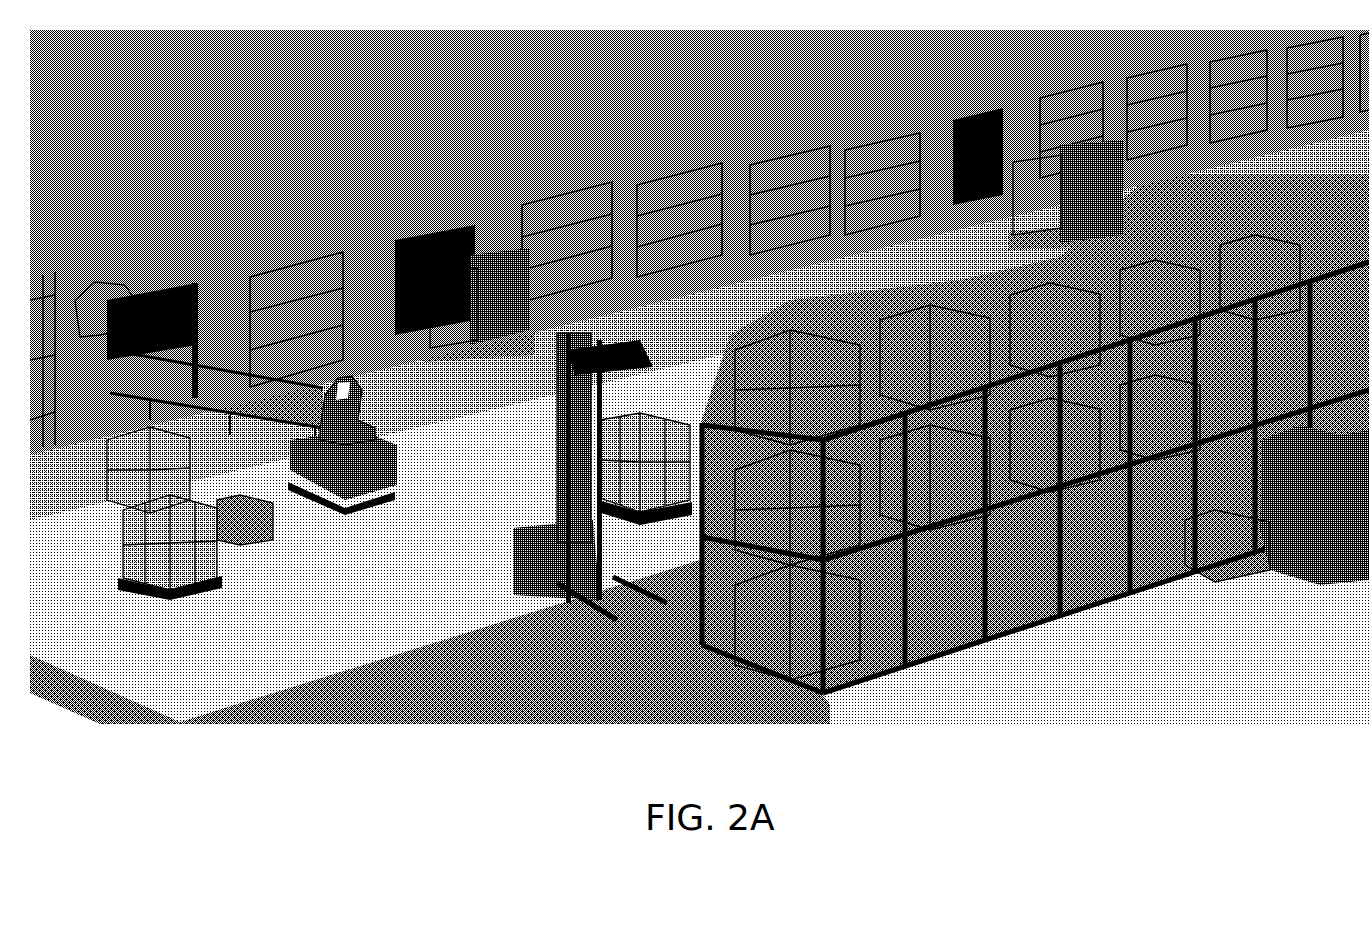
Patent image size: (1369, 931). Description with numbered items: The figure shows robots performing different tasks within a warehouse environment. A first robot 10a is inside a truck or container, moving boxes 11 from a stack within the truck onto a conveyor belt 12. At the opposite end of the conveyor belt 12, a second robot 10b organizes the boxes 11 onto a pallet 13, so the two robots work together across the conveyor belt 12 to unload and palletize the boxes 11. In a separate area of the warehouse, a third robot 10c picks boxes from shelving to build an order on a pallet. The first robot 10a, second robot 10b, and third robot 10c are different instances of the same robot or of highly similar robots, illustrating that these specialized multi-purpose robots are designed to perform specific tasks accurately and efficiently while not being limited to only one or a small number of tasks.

The first robot 10a is at (118, 235).
The second robot 10b is at (342, 552).
The third robot 10c is at (1332, 608).
The boxes 11 is at (207, 358).
The conveyor belt 12 is at (293, 388).
The pallet 13 is at (187, 592).